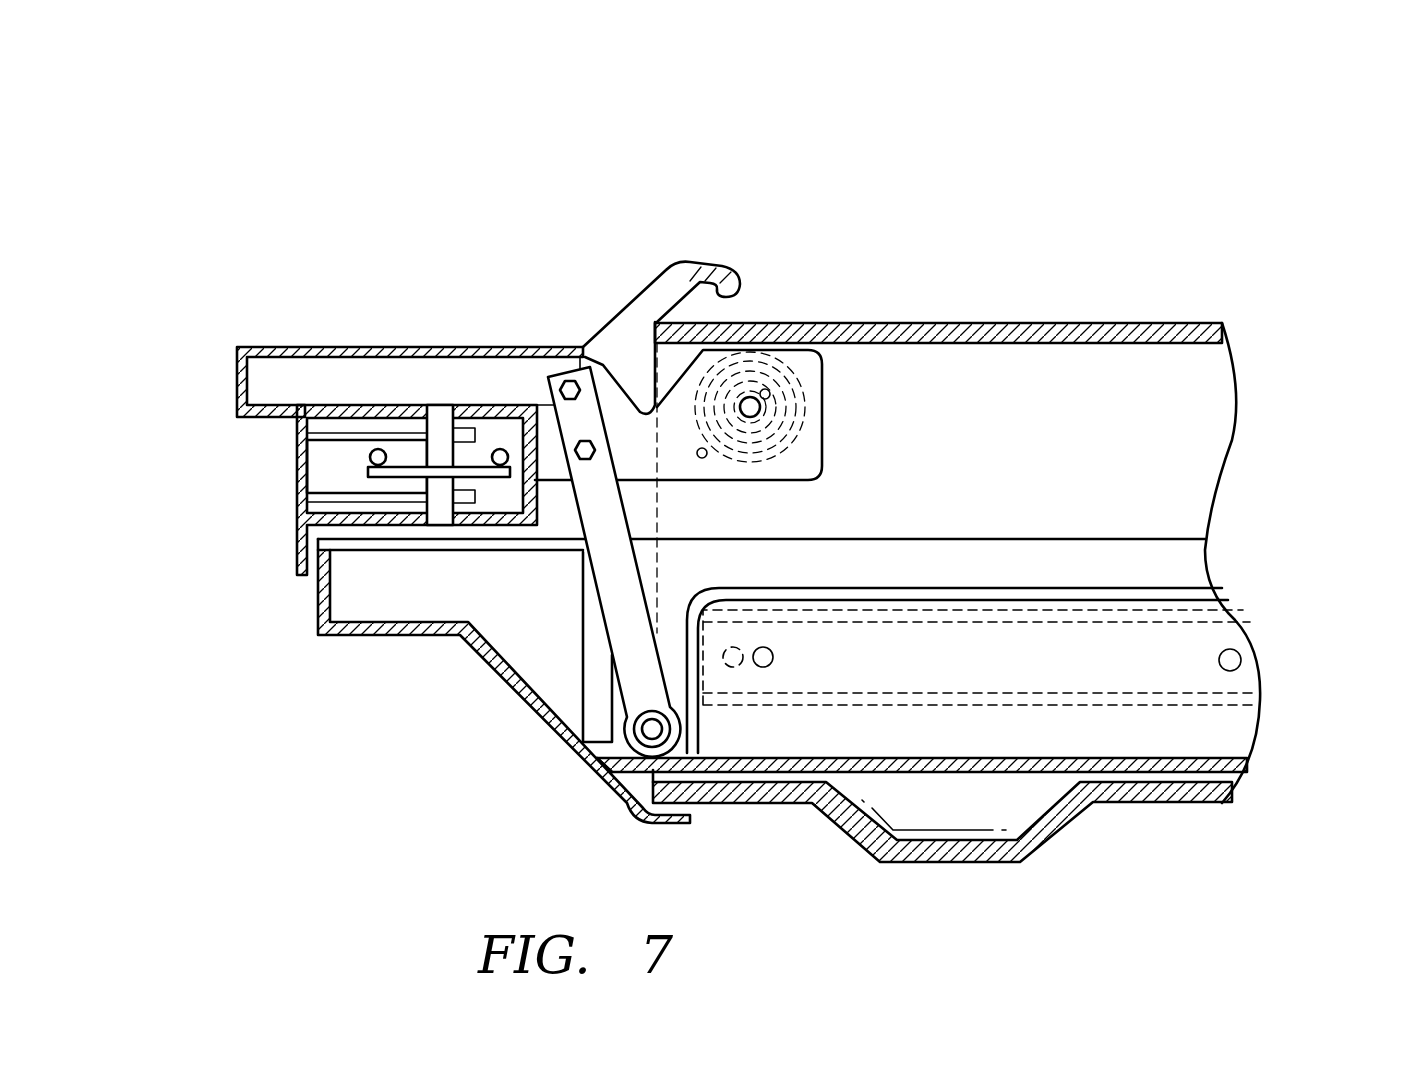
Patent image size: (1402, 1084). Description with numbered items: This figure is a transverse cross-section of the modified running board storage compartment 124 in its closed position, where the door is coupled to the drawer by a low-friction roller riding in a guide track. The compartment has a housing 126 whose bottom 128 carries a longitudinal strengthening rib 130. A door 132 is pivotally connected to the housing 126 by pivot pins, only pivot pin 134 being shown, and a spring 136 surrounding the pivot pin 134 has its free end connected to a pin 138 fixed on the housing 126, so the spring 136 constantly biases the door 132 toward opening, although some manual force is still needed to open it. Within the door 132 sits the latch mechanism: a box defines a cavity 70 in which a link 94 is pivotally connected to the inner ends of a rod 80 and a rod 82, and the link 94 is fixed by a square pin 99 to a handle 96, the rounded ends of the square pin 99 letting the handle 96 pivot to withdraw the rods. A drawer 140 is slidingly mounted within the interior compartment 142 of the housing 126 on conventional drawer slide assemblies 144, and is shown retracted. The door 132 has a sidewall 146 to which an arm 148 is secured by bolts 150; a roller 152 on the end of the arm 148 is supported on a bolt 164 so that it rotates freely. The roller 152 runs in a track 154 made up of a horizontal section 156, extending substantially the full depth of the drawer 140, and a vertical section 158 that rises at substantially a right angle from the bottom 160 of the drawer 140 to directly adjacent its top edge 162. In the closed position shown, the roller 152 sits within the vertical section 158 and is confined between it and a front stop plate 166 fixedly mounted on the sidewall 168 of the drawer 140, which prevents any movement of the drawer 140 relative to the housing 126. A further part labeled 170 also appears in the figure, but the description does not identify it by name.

The running board storage compartment 124 is at (949, 253).
The housing 126 is at (1123, 327).
The bottom 128 is at (1160, 805).
The longitudinal strengthening rib 130 is at (957, 865).
The door 132 is at (275, 338).
The pivot pin 134 is at (752, 402).
The spring 136 is at (811, 425).
The pin 138 is at (697, 455).
The drawer 140 is at (574, 769).
The interior compartment 142 is at (1193, 785).
The drawer slide assemblies 144 is at (1208, 620).
The sidewall 146 is at (283, 378).
The arm 148 is at (622, 609).
The bolts 150 is at (560, 393).
The roller 152 is at (631, 795).
The track 154 is at (1090, 575).
The horizontal section 156 is at (1040, 580).
The vertical section 158 is at (680, 630).
The bottom 160 is at (1093, 762).
The top edge 162 is at (1157, 537).
The bolt 164 is at (668, 714).
The front stop plate 166 is at (590, 703).
The sidewall 168 is at (953, 563).
The lower housing 170 is at (515, 651).
The cavity 70 is at (380, 433).
The rod 80 is at (375, 455).
The rod 82 is at (505, 449).
The link 94 is at (487, 478).
The handle 96 is at (284, 462).
The square pin 99 is at (440, 416).